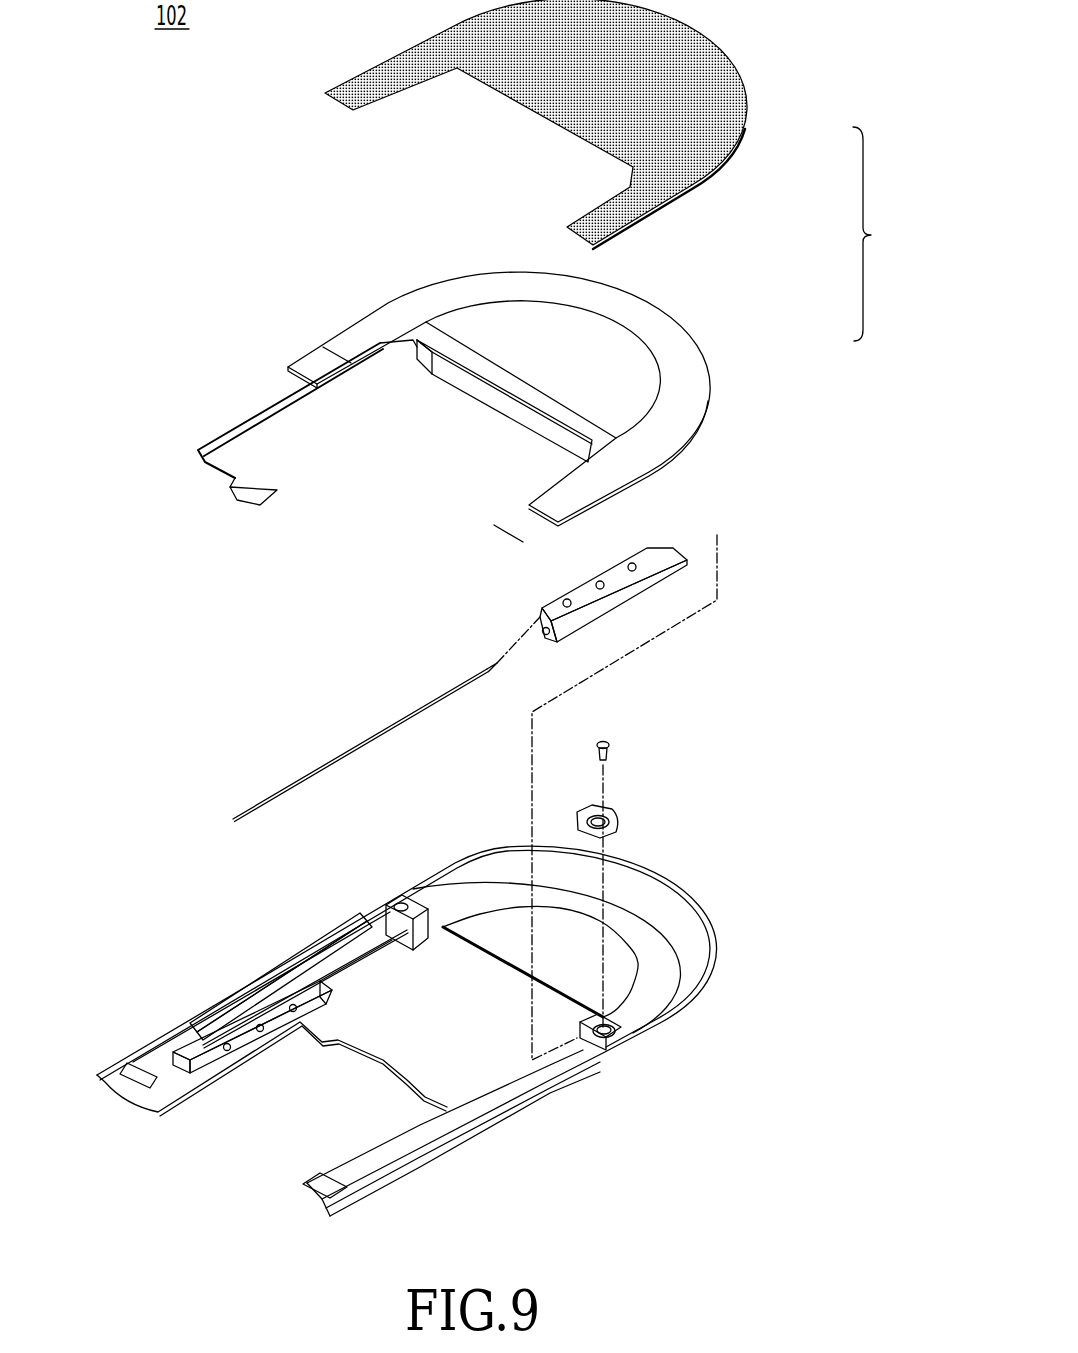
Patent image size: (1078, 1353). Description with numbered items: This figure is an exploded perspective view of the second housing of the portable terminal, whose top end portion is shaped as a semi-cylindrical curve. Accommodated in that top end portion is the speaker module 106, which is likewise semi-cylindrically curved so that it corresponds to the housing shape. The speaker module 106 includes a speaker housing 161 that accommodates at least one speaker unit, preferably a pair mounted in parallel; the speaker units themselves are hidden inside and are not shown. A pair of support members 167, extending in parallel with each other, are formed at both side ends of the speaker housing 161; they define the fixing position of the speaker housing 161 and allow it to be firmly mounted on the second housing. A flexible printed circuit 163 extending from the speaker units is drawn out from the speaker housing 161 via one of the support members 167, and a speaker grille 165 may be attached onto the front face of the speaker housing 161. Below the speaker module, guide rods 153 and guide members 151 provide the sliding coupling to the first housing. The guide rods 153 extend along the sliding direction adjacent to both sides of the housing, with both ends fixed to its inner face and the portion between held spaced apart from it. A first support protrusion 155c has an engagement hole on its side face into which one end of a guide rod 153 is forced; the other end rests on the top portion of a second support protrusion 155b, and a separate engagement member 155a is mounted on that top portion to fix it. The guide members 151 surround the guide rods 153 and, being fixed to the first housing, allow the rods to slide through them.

The speaker module 106 is at (884, 234).
The speaker grille 165 is at (745, 122).
The speaker housing 161 is at (674, 316).
The support members 167 is at (332, 357).
The flexible printed circuit 163 is at (252, 420).
The guide members 151 is at (653, 553).
The guide rods 153 is at (383, 733).
The engagement member 155a is at (412, 898).
The second support protrusion 155b is at (613, 1022).
The first support protrusion 155c is at (140, 1073).